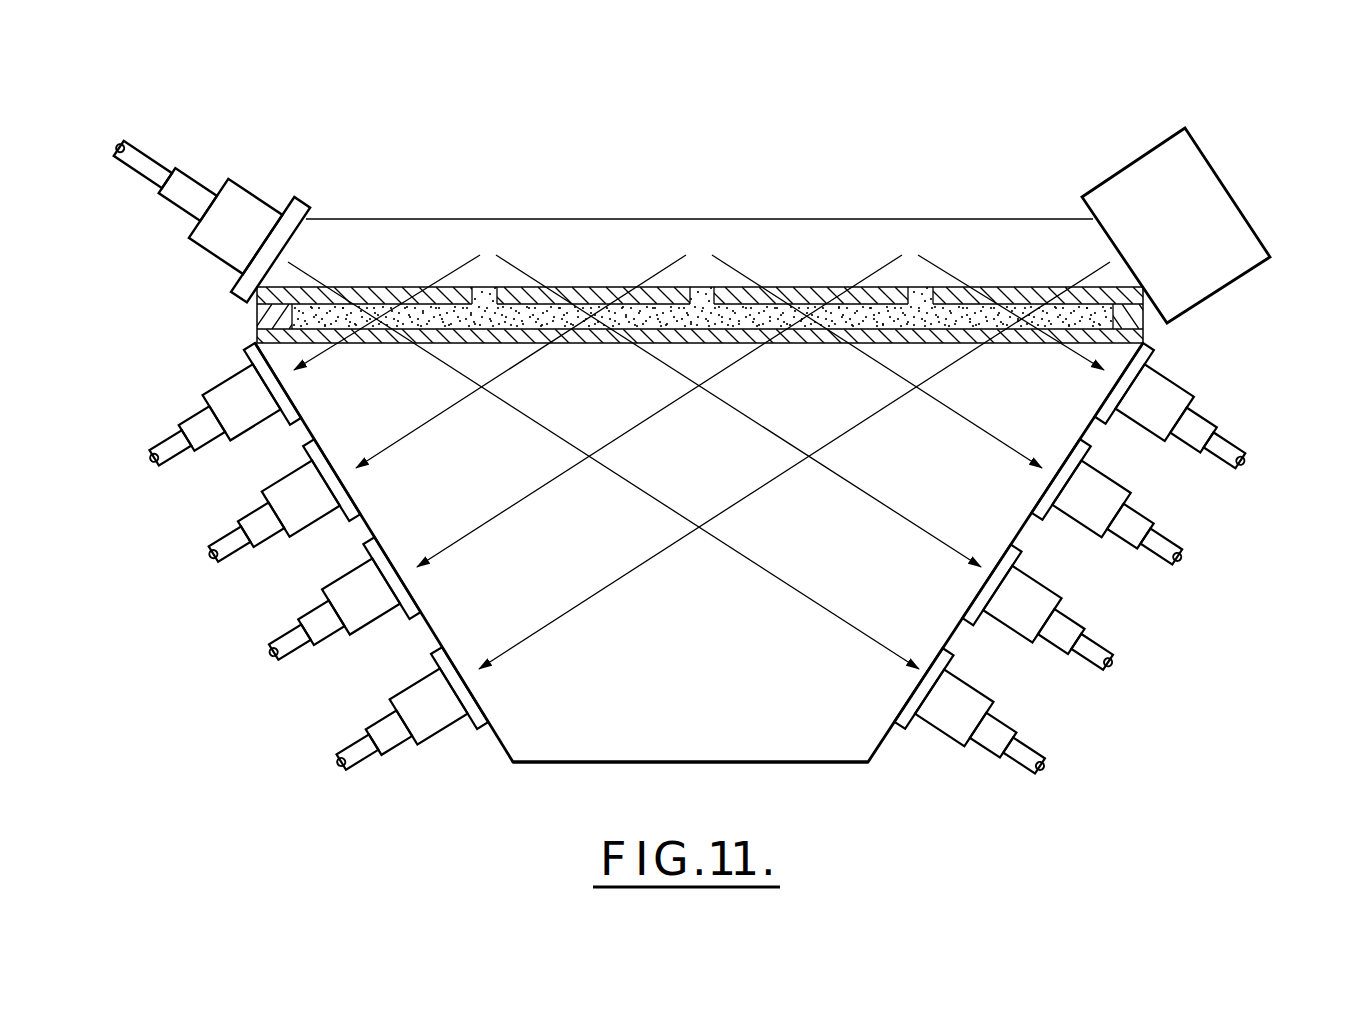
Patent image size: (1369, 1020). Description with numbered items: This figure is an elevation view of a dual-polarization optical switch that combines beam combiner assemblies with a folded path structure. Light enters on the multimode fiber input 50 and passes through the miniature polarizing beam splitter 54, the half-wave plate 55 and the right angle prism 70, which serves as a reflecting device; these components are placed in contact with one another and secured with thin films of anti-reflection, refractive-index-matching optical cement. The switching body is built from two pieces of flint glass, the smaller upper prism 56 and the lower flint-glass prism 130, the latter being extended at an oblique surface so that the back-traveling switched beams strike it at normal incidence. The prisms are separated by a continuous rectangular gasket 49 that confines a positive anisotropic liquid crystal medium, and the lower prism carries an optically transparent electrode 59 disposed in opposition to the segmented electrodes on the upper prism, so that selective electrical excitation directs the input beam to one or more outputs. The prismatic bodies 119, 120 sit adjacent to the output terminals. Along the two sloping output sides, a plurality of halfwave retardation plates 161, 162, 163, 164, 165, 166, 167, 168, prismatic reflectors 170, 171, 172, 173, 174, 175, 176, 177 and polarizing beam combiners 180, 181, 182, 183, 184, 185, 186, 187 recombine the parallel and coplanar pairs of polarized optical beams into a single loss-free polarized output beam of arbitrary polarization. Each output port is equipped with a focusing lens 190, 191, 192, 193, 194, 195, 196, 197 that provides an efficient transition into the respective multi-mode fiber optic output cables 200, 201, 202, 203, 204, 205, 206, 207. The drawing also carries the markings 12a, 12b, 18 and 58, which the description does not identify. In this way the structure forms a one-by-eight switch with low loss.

The light ray path (left) 12a is at (387, 318).
The light ray path (right) 12b is at (1011, 320).
The optical fiber 18 is at (138, 162).
The continuous rectangular gasket 49 is at (255, 318).
The multimode fiber input 50 is at (192, 183).
The miniature PBS 54 is at (255, 197).
The right angle prism 70 is at (253, 200).
The half-wave plate 55 is at (298, 208).
The smaller upper prism 56 is at (451, 218).
The scintillator layer 58 is at (755, 316).
The optically transparent electrode 59 is at (810, 337).
The prismatic body 119 is at (1215, 225).
The prismatic body 120 is at (1230, 193).
The lower flint-glass prism 130 is at (707, 763).
The halfwave retardation plate 161 is at (253, 345).
The halfwave retardation plate 162 is at (307, 447).
The halfwave retardation plate 163 is at (362, 548).
The halfwave retardation plate 164 is at (430, 652).
The halfwave retardation plate 165 is at (1152, 355).
The halfwave retardation plate 166 is at (1088, 452).
The halfwave retardation plate 167 is at (1015, 550).
The halfwave retardation plate 168 is at (953, 653).
The prismatic reflector 170 is at (216, 396).
The prismatic reflector 171 is at (272, 499).
The prismatic reflector 172 is at (330, 595).
The prismatic reflector 173 is at (398, 703).
The prismatic reflector 174 is at (1192, 402).
The prismatic reflector 175 is at (1118, 498).
The prismatic reflector 176 is at (1050, 604).
The prismatic reflector 177 is at (982, 707).
The polarizing beam combiner 180 is at (196, 360).
The polarizing beam combiner 181 is at (245, 478).
The polarizing beam combiner 182 is at (307, 568).
The polarizing beam combiner 183 is at (372, 673).
The polarizing beam combiner 184 is at (1154, 402).
The polarizing beam combiner 185 is at (1138, 477).
The polarizing beam combiner 186 is at (1073, 580).
The polarizing beam combiner 187 is at (1005, 680).
The focusing lens 190 is at (182, 418).
The focusing lens 191 is at (240, 527).
The focusing lens 192 is at (303, 613).
The focusing lens 193 is at (377, 715).
The focusing lens 194 is at (1212, 422).
The focusing lens 195 is at (1148, 518).
The focusing lens 196 is at (1082, 622).
The focusing lens 197 is at (1017, 722).
The multi-mode fiber optic output cable 200 is at (158, 450).
The multi-mode fiber optic output cable 201 is at (213, 553).
The multi-mode fiber optic output cable 202 is at (280, 647).
The multi-mode fiber optic output cable 203 is at (347, 750).
The multi-mode fiber optic output cable 204 is at (1236, 450).
The multi-mode fiber optic output cable 205 is at (1173, 547).
The multi-mode fiber optic output cable 206 is at (1107, 650).
The multi-mode fiber optic output cable 207 is at (1043, 750).